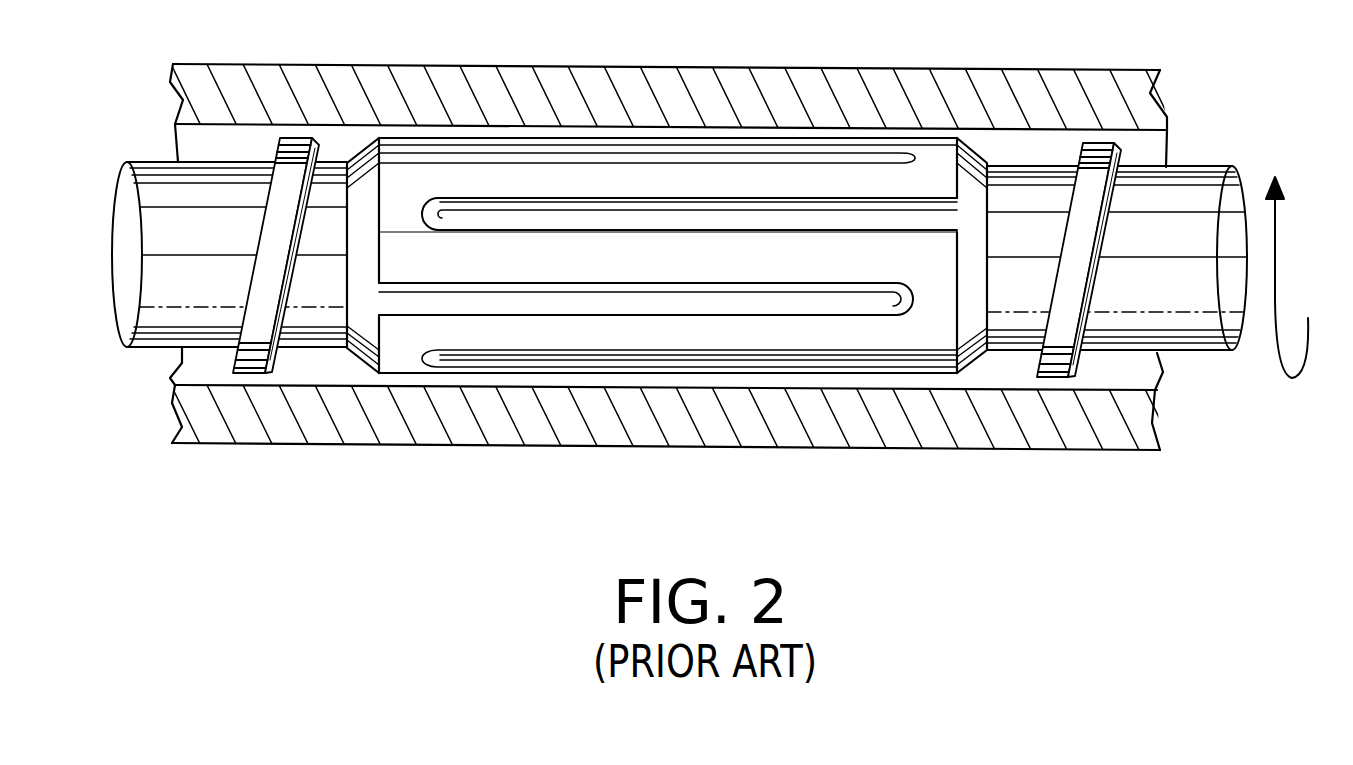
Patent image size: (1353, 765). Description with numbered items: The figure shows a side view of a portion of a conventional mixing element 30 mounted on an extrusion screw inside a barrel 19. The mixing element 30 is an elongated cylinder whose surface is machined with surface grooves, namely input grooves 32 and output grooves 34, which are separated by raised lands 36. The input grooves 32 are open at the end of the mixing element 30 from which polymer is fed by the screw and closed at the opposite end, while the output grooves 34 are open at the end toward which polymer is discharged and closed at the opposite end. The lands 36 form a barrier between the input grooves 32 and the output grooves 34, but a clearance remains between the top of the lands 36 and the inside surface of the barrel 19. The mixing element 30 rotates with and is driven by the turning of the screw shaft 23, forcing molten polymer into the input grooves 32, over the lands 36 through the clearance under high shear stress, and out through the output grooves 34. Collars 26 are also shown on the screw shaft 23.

The barrel 19 is at (707, 67).
The screw shaft 23 is at (1183, 193).
The retaining collar 26 is at (1067, 317).
The mixing element 30 is at (968, 162).
The input grooves 32 is at (847, 222).
The output grooves 34 is at (777, 155).
The lands 36 is at (607, 178).